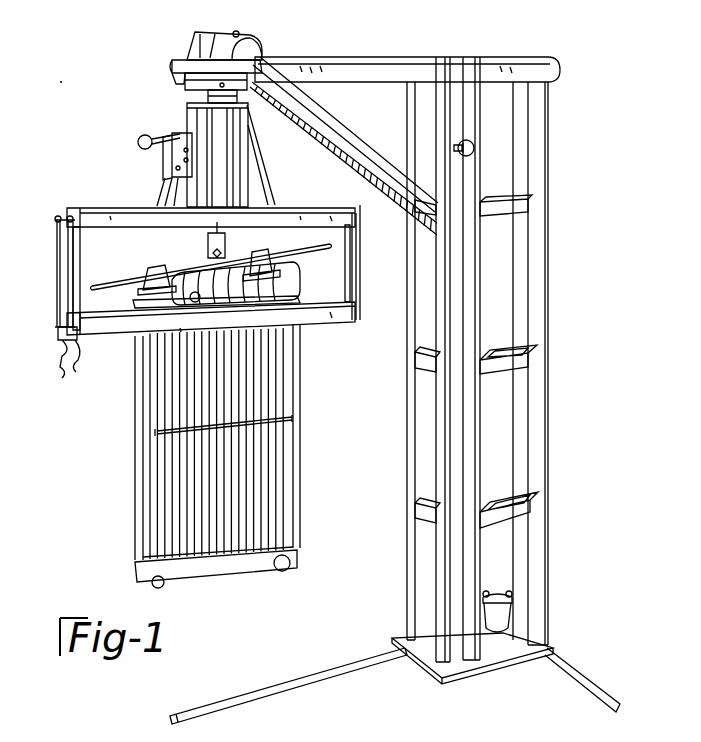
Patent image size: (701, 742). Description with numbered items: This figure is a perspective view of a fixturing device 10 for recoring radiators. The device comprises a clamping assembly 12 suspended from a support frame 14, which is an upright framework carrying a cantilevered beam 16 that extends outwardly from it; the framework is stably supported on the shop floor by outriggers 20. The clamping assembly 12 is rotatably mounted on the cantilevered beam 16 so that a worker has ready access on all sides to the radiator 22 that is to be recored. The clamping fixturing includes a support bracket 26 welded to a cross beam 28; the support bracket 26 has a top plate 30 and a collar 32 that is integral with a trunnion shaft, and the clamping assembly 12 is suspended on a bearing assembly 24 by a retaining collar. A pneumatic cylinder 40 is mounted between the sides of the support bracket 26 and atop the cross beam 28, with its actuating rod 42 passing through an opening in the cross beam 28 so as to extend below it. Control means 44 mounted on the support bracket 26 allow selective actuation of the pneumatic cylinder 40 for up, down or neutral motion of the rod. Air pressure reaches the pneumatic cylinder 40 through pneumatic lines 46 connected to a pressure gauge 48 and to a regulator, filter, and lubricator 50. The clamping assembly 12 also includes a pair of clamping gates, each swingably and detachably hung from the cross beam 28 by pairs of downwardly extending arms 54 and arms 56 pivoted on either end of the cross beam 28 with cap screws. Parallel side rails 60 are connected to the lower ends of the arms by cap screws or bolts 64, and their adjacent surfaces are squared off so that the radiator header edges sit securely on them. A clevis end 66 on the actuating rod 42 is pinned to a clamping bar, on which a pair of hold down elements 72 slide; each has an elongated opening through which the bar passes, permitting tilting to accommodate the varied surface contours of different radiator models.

The fixturing device 10 is at (80, 108).
The clamping assembly 12 is at (90, 198).
The support frame 14 is at (548, 55).
The cantilevered beam 16 is at (345, 56).
The outriggers 20 is at (352, 666).
The radiator 22 is at (300, 494).
The bearing assembly 24 is at (162, 84).
The support bracket 26 is at (293, 152).
The cross beam 28 is at (304, 214).
The top plate 30 is at (248, 103).
The collar 32 is at (205, 94).
The pneumatic cylinder 40 is at (215, 173).
The actuating rod 42 is at (224, 232).
The control means 44 is at (142, 165).
The pneumatic lines 46 is at (238, 38).
The pressure gauge 48 is at (478, 150).
The regulator, filter, and lubricator 50 is at (512, 625).
The downwardly extending arms 54 is at (60, 310).
The downwardly extending arms 56 is at (57, 272).
The side rails 60 is at (304, 320).
The cap screws or bolts 64 is at (65, 345).
The clevis end 66 is at (208, 254).
The hold down elements 72 is at (148, 266).